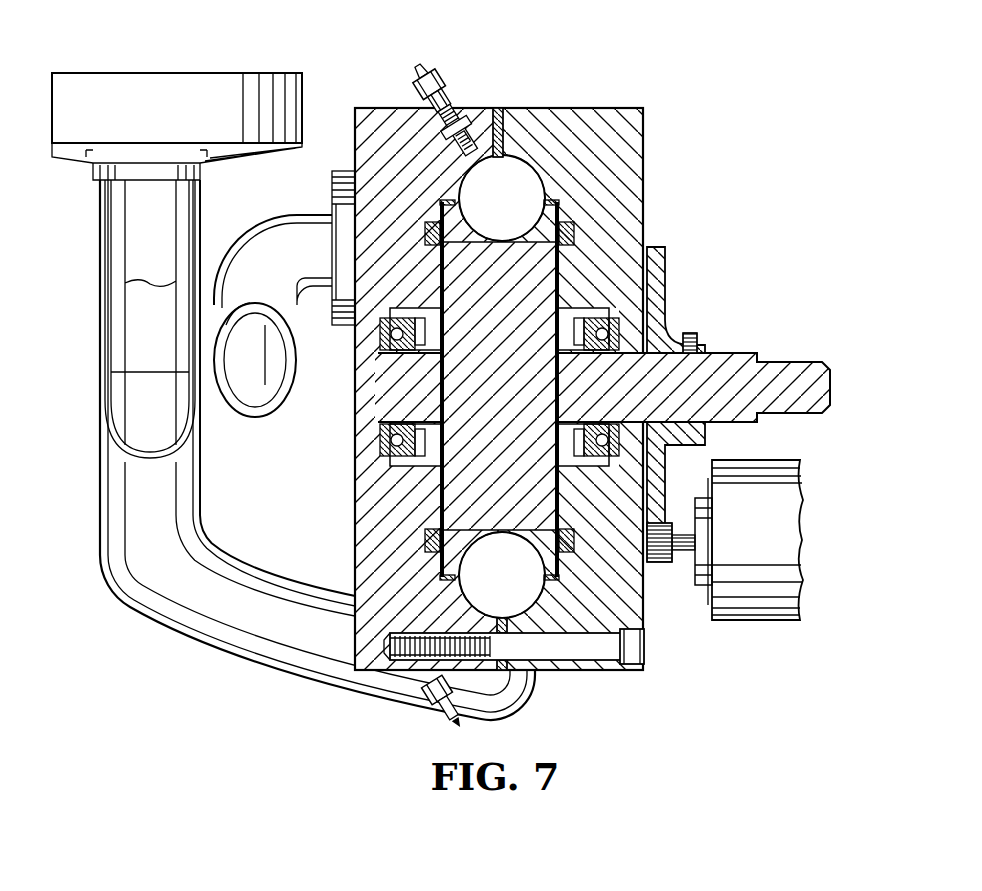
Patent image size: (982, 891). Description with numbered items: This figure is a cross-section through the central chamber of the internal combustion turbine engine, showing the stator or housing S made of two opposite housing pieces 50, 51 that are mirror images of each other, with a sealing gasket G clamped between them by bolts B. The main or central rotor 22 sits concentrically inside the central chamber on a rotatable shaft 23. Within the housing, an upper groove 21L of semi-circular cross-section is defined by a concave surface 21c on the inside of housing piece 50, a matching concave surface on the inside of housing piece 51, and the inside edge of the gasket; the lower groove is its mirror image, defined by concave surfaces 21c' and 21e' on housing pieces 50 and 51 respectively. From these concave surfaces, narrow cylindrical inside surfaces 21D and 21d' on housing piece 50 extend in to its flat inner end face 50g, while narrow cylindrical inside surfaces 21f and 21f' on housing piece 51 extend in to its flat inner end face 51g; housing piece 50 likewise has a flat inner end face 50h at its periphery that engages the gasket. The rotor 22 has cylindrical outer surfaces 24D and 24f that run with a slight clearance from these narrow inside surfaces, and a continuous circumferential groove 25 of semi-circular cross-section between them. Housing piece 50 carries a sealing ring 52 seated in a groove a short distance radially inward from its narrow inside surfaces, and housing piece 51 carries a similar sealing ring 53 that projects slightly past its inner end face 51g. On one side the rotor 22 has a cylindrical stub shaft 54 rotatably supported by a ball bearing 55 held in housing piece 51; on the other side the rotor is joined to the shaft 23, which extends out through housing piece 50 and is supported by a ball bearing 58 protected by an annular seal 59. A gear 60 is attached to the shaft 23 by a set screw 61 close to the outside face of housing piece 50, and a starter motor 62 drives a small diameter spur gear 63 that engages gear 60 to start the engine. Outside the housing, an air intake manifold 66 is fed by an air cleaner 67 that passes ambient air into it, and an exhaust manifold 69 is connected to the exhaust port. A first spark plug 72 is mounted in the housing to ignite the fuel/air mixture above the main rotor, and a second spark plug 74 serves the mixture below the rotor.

The main rotor 22 is at (602, 387).
The rotatable shaft 23 is at (755, 353).
The circumferential groove 25 is at (492, 262).
The housing piece 50 is at (598, 108).
The inner end face 50g is at (480, 236).
The housing hole 50h is at (530, 110).
The housing piece 51 is at (380, 108).
The inner end face 51g is at (446, 318).
The sealing ring 52 is at (574, 233).
The sealing ring 53 is at (425, 233).
The stub shaft 54 is at (368, 380).
The ball bearing 55 is at (400, 430).
The ball bearing 58 is at (612, 312).
The annular seal 59 is at (584, 312).
The gear 60 is at (665, 275).
The set screw 61 is at (692, 332).
The starter motor 62 is at (737, 540).
The spur gear 63 is at (660, 562).
The air intake manifold 66 is at (128, 600).
The air cleaner 67 is at (177, 126).
The exhaust manifold 69 is at (302, 238).
The first spark plug 72 is at (445, 92).
The fitting 74 is at (455, 705).
The port 21L is at (464, 184).
The concave surface 21c is at (520, 195).
The cylindrical inside surface 21D is at (548, 180).
The cylindrical outer surface 24D is at (558, 200).
The cylindrical outer surface 24f is at (452, 200).
The cylindrical inside surface 21f is at (432, 184).
The concave surface 21e' is at (502, 575).
The concave surface 21c' is at (510, 585).
The cylindrical inside surface 21f' is at (423, 583).
The cylindrical inside surface 21d' is at (581, 582).
The gasket G is at (498, 110).
The housing S is at (645, 128).
The bolt B is at (585, 662).